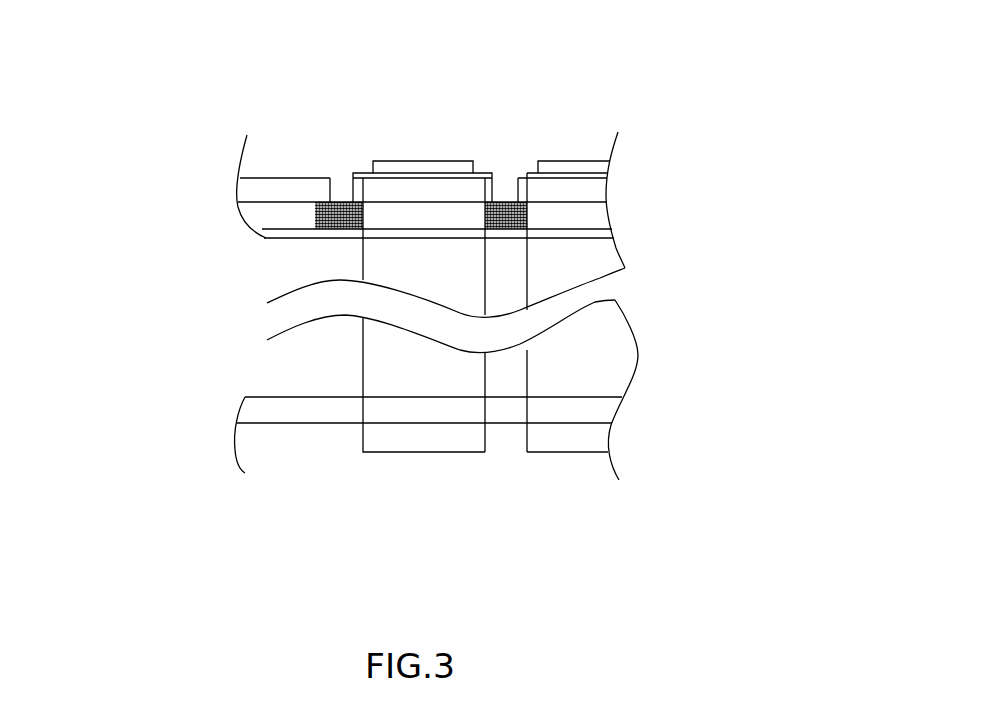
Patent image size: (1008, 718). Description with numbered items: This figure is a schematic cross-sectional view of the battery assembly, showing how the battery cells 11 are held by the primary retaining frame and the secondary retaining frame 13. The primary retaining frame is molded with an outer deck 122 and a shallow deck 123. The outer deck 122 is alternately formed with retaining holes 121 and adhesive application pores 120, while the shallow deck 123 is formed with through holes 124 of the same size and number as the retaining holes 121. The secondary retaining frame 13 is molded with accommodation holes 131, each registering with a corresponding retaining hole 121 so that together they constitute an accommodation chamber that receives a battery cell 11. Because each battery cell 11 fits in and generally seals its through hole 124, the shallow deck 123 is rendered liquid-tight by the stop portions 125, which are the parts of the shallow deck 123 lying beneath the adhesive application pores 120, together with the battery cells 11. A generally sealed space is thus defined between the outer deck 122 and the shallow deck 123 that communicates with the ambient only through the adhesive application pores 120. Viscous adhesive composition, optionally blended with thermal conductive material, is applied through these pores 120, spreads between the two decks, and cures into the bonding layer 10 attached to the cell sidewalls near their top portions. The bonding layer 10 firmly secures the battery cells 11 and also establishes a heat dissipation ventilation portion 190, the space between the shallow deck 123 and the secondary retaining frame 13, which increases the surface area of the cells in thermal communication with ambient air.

The bonding layer 10 is at (500, 202).
The battery cell 11 is at (368, 344).
The secondary retaining frame 13 is at (295, 420).
The accommodation hole 131 is at (362, 410).
The adhesive application pore 120 is at (347, 176).
The retaining hole 121 is at (530, 187).
The outer deck 122 is at (243, 187).
The shallow deck 123 is at (265, 236).
The through hole 124 is at (360, 233).
The stop portion 125 is at (280, 230).
The heat dissipation ventilation portion 190 is at (518, 385).